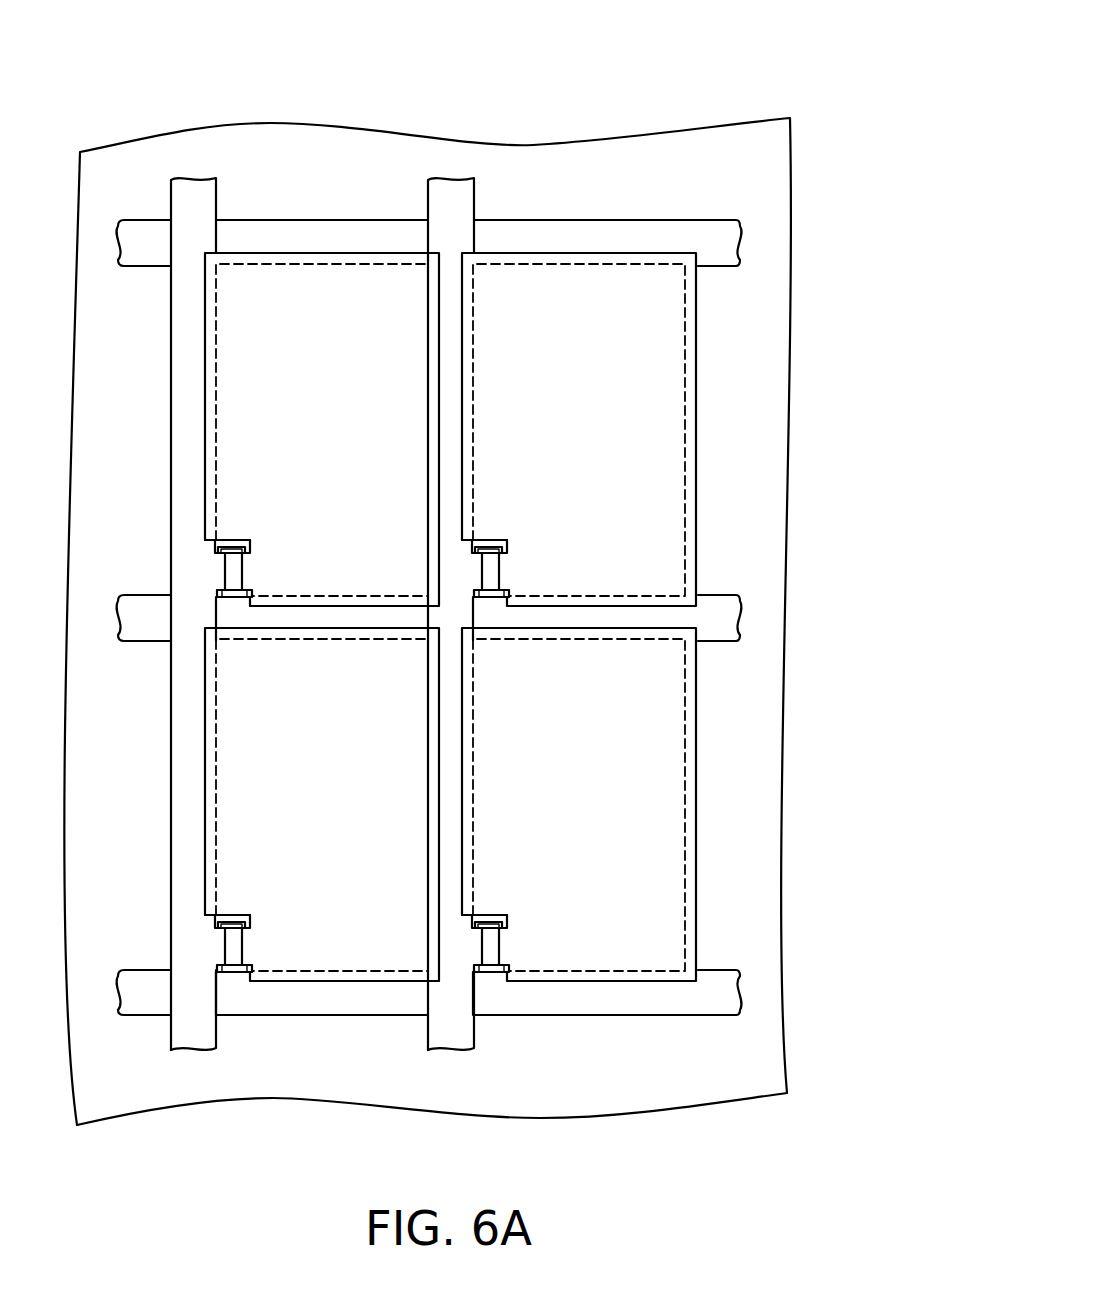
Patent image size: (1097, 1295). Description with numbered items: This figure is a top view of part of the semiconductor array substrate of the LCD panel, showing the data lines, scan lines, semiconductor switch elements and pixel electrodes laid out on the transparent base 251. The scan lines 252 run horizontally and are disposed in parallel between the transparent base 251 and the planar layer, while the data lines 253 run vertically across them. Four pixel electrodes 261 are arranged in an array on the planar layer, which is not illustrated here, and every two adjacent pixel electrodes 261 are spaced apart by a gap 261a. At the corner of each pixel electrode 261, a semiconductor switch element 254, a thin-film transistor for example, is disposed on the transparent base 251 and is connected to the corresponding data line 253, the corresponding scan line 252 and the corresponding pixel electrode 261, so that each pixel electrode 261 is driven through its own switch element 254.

The transparent base 251 is at (785, 303).
The scan line 252 is at (590, 227).
The data line 253 is at (450, 193).
The semiconductor switch element 254 is at (498, 543).
The pixel electrode 261 is at (687, 375).
The gap 261a is at (440, 332).